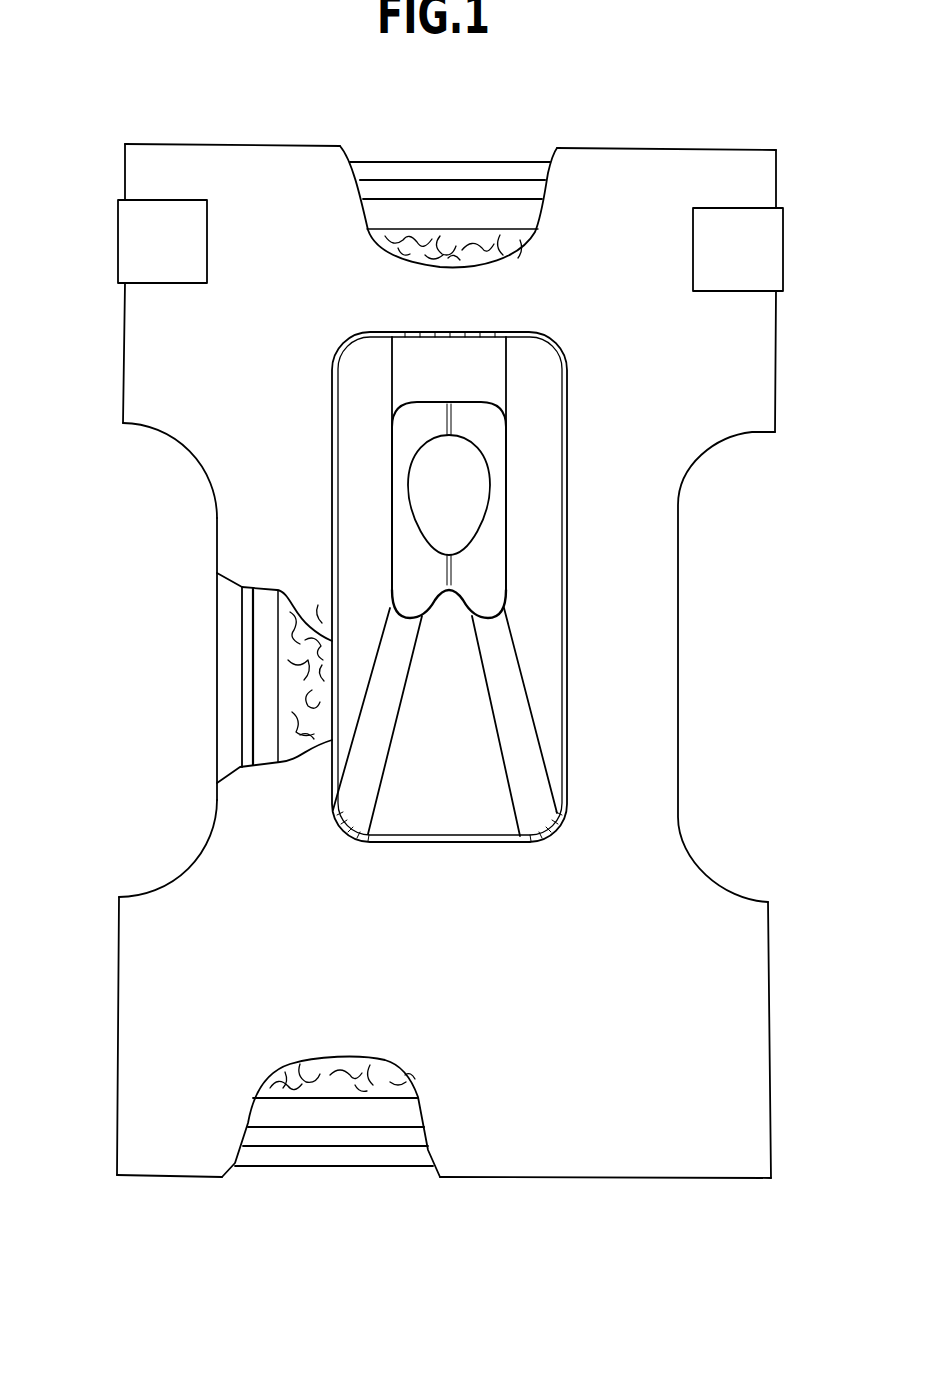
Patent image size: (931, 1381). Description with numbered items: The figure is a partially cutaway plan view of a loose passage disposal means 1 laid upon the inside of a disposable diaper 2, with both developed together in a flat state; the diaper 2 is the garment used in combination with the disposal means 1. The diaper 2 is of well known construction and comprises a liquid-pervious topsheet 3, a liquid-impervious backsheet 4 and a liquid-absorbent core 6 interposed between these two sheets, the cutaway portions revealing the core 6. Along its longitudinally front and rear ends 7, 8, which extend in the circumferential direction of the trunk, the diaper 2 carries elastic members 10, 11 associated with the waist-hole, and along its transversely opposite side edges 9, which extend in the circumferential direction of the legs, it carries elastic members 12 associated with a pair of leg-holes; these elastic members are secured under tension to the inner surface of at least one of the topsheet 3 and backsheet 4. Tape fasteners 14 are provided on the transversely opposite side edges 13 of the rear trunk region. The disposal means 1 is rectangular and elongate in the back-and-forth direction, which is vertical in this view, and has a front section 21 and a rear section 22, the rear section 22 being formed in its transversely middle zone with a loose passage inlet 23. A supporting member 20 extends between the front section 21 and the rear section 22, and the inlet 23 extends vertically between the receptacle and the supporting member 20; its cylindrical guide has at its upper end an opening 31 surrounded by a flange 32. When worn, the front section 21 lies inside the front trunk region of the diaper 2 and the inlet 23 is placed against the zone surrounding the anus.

The loose passage disposal means 1 is at (452, 579).
The disposable diaper 2 is at (610, 140).
The liquid-pervious topsheet 3 is at (213, 878).
The liquid-impervious backsheet 4 is at (234, 702).
The liquid-absorbent core 6 is at (295, 748).
The front end 7 is at (600, 1147).
The rear end 8 is at (270, 160).
The side edges 9 is at (228, 497).
The elastic members 10 is at (375, 1128).
The elastic members 11 is at (477, 199).
The elastic members 12 is at (250, 645).
The side edges 13 is at (160, 372).
The tape fasteners 14 is at (142, 243).
The supporting member 20 is at (502, 657).
The front section 21 is at (440, 820).
The rear section 22 is at (363, 353).
The loose passage inlet 23 is at (388, 452).
The opening 31 is at (471, 460).
The flange 32 is at (488, 562).